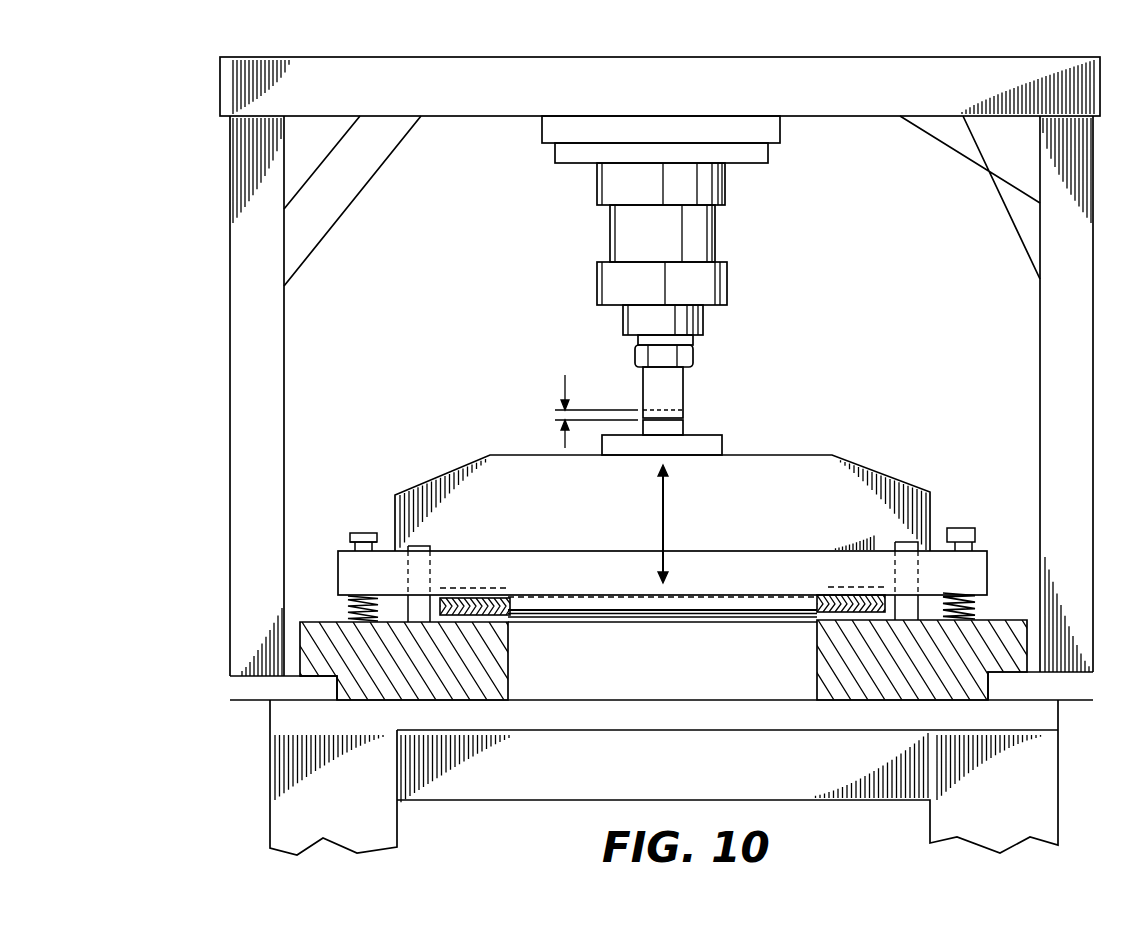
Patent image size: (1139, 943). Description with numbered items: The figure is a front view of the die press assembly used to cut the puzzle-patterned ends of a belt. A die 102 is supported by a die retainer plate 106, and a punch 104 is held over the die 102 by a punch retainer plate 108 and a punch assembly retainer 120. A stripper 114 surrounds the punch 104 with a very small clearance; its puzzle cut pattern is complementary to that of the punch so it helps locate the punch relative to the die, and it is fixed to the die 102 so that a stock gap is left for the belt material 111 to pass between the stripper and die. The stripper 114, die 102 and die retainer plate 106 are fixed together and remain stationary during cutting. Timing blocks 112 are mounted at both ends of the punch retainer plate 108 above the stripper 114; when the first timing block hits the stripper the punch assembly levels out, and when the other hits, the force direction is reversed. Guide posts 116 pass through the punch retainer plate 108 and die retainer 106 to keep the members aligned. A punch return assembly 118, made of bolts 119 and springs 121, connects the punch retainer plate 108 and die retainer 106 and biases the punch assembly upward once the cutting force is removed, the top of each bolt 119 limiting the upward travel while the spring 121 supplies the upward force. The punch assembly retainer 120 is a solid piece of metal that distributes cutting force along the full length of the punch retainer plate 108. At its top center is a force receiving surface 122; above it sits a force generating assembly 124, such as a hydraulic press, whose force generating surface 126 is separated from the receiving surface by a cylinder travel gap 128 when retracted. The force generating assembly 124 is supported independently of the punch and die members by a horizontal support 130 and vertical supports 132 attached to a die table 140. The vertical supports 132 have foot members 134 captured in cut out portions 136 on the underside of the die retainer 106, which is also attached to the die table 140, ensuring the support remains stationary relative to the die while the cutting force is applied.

The die 102 is at (510, 620).
The punch 104 is at (612, 602).
The die retainer plate 106 is at (347, 613).
The punch retainer plate 108 is at (718, 570).
The belt material 111 is at (697, 622).
The timing blocks 112 is at (483, 597).
The stripper 114 is at (500, 598).
The guide posts 116 is at (427, 540).
The punch return assembly 118 is at (365, 533).
The punch return assembly bolt 119 is at (350, 550).
The punch assembly retainer 120 is at (840, 455).
The punch return assembly spring 121 is at (348, 613).
The force receiving surface 122 is at (657, 417).
The force generating assembly 124 is at (712, 235).
The force generating surface 126 is at (677, 430).
The cylinder travel gap 128 is at (594, 400).
The force generating assembly horizontal support 130 is at (483, 104).
The vertical supports 132 is at (232, 370).
The foot member 134 is at (233, 697).
The cut out portions 136 is at (302, 675).
The die table 140 is at (270, 720).